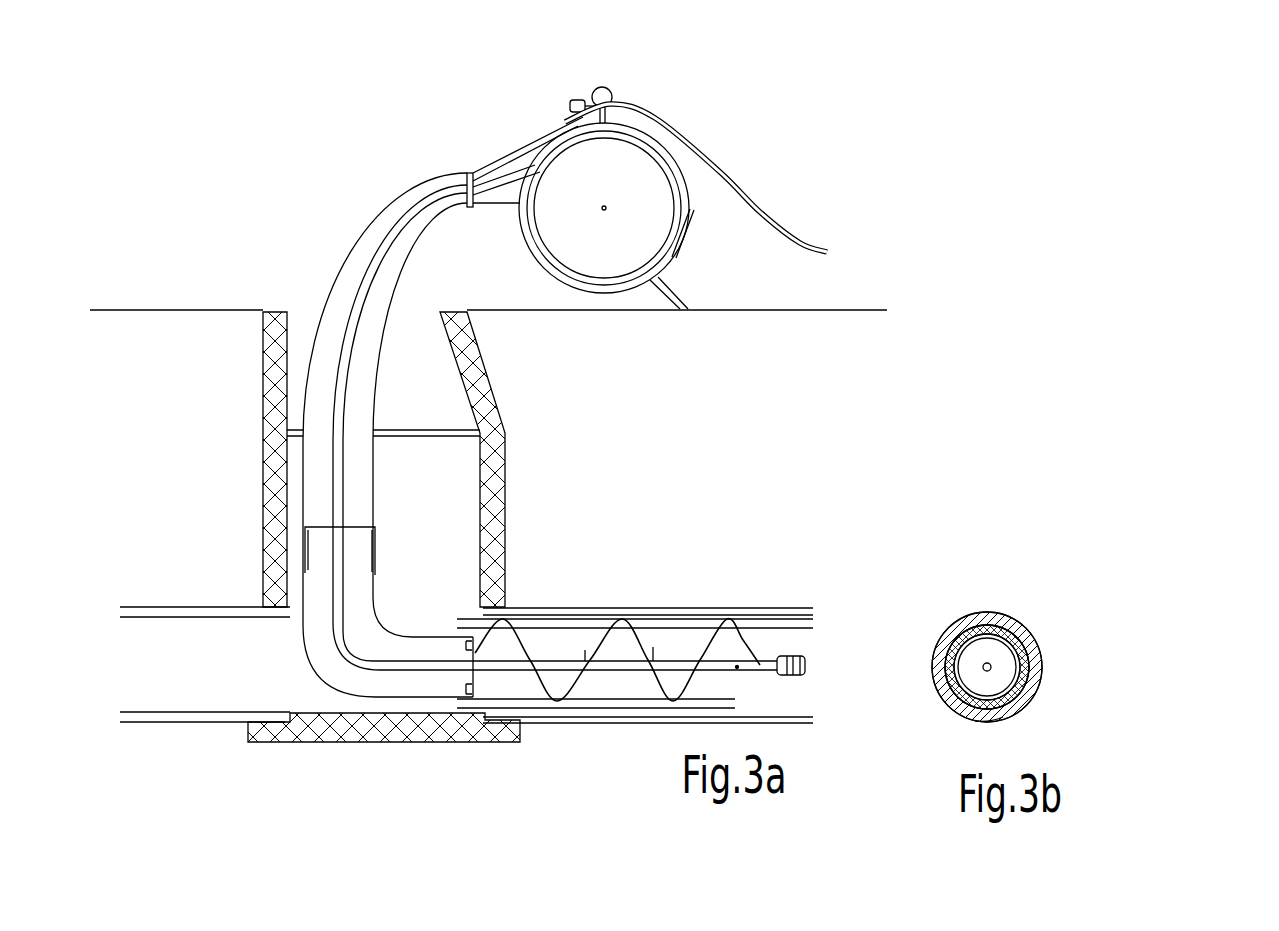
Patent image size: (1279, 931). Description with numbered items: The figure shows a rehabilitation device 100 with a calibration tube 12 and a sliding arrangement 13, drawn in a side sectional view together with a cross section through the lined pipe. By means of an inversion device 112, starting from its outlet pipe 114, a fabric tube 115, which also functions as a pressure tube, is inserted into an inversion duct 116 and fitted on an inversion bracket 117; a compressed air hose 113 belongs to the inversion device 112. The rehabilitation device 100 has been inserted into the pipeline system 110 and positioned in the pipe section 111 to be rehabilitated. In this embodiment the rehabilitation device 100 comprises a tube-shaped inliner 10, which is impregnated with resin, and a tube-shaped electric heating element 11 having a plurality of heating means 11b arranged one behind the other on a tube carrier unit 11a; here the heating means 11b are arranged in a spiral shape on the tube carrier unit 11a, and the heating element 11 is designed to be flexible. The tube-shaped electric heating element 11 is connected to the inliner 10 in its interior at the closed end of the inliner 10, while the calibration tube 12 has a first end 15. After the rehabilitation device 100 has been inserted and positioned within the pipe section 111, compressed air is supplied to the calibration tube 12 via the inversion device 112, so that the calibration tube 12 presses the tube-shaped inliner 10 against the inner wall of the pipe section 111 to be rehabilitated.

In FIG. 3A, the tube-shaped inliner 10 is at (692, 625).
In FIG. 3B, the tube-shaped inliner 10 is at (1017, 627).
In FIG. 3A, the tube-shaped electric heating element 11 is at (372, 258).
In FIG. 3B, the tube-shaped electric heating element 11 is at (1030, 657).
In FIG. 3A, the tube carrier unit 11a is at (585, 650).
In FIG. 3A, the heating means 11b is at (653, 647).
In FIG. 3A, the calibration tube 12 is at (753, 650).
In FIG. 3B, the calibration tube 12 is at (1003, 717).
In FIG. 3A, the sliding arrangement 13 is at (737, 667).
In FIG. 3B, the sliding arrangement 13 is at (986, 662).
In FIG. 3A, the first end of the calibration tube 15 is at (760, 665).
In FIG. 3A, the rehabilitation device 100 is at (608, 772).
In FIG. 3B, the rehabilitation device 100 is at (1100, 585).
In FIG. 3A, the pipeline system 110 is at (290, 698).
In FIG. 3A, the pipe section 111 is at (548, 625).
In FIG. 3B, the pipe section 111 is at (1035, 686).
In FIG. 3A, the inversion device 112 is at (612, 145).
In FIG. 3A, the compressed air hose 113 is at (735, 182).
In FIG. 3A, the outlet pipe 114 is at (480, 170).
In FIG. 3A, the fabric tube 115 is at (317, 478).
In FIG. 3A, the inversion duct 116 is at (507, 462).
In FIG. 3A, the inversion bracket 117 is at (320, 617).